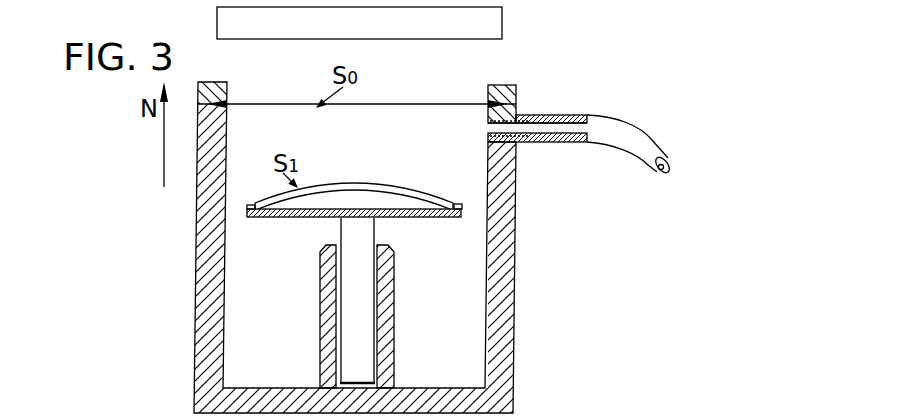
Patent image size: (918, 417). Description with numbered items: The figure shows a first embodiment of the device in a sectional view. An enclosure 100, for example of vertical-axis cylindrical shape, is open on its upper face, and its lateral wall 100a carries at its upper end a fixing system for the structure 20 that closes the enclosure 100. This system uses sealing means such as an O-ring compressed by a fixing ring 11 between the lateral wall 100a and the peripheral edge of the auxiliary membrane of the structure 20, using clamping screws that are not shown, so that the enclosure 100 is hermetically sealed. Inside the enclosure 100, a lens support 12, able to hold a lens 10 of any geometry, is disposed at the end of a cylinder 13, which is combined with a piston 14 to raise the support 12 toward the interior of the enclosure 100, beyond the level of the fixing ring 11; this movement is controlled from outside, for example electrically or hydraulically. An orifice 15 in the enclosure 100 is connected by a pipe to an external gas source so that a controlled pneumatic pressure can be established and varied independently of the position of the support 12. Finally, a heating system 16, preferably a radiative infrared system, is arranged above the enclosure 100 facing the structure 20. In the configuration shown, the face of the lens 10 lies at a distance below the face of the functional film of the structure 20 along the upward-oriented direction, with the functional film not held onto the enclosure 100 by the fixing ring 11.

The lens 10 is at (414, 195).
The fixing ring 11 is at (515, 85).
The lens support 12 is at (440, 217).
The cylinder 13 is at (352, 341).
The piston 14 is at (383, 363).
The orifice 15 is at (532, 115).
The heating system 16 is at (487, 22).
The structure 20 is at (393, 103).
The enclosure 100 is at (540, 218).
The lateral wall 100a is at (497, 303).